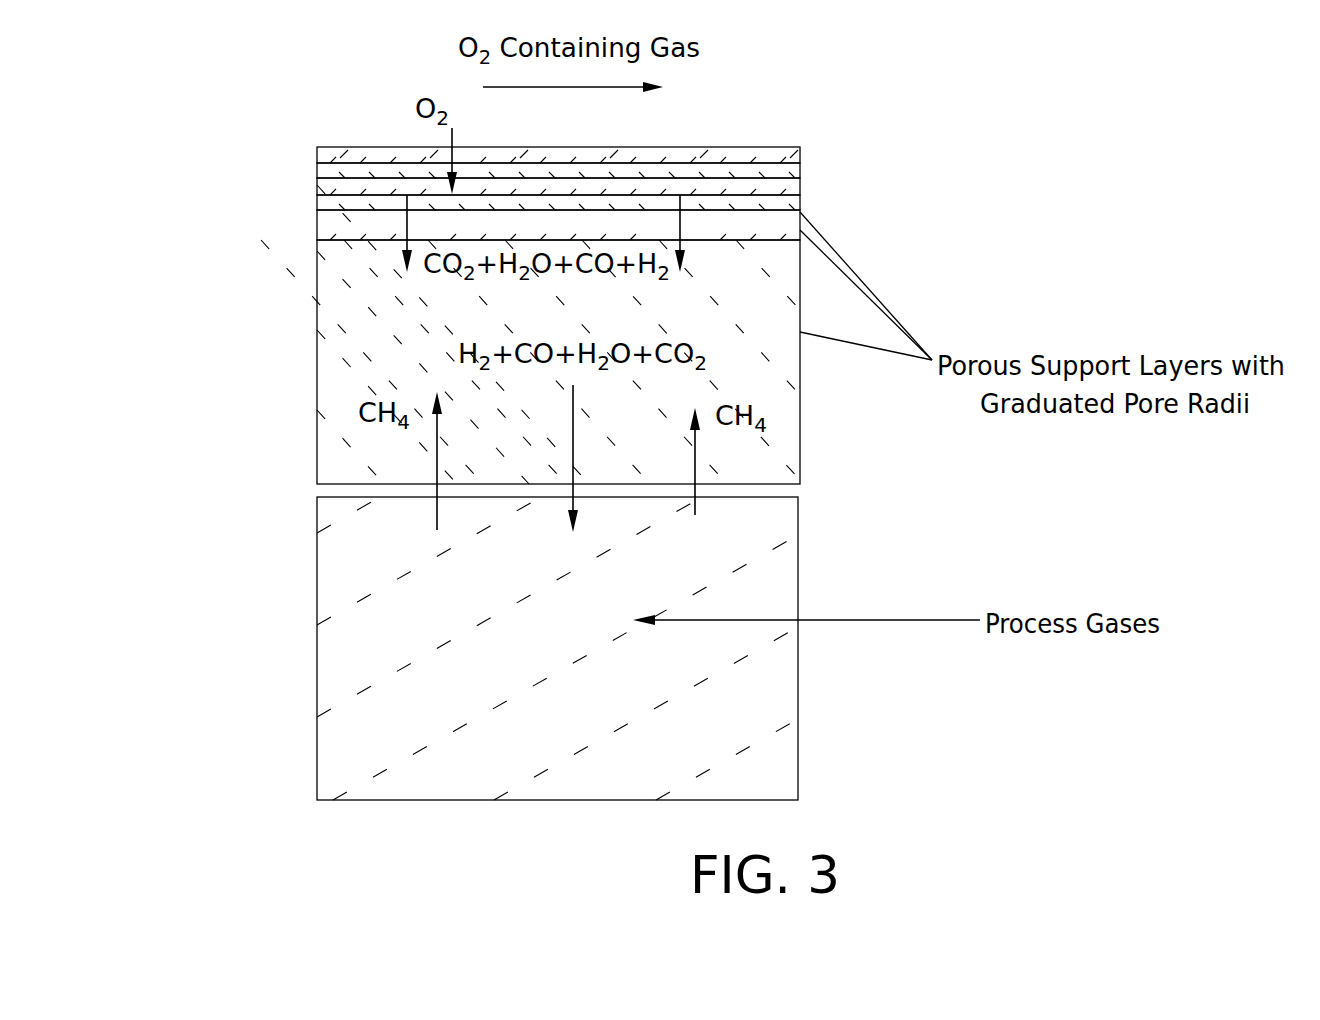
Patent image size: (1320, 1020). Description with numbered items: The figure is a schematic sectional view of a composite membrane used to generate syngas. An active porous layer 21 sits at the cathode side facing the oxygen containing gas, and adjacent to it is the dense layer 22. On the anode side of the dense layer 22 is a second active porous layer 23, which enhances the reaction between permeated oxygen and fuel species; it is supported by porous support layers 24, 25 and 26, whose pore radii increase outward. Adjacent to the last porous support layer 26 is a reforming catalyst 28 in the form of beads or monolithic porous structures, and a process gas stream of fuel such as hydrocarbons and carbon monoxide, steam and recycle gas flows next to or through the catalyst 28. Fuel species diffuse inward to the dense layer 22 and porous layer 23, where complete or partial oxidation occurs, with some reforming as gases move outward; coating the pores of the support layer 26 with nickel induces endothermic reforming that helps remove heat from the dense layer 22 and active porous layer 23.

The active porous layer 21 is at (800, 147).
The dense layer 22 is at (800, 179).
The second active porous layer 23 is at (800, 195).
The porous support layer 24 is at (317, 211).
The porous support layer 25 is at (345, 228).
The last porous support layer 26 is at (800, 408).
The reforming catalyst 28 is at (695, 725).